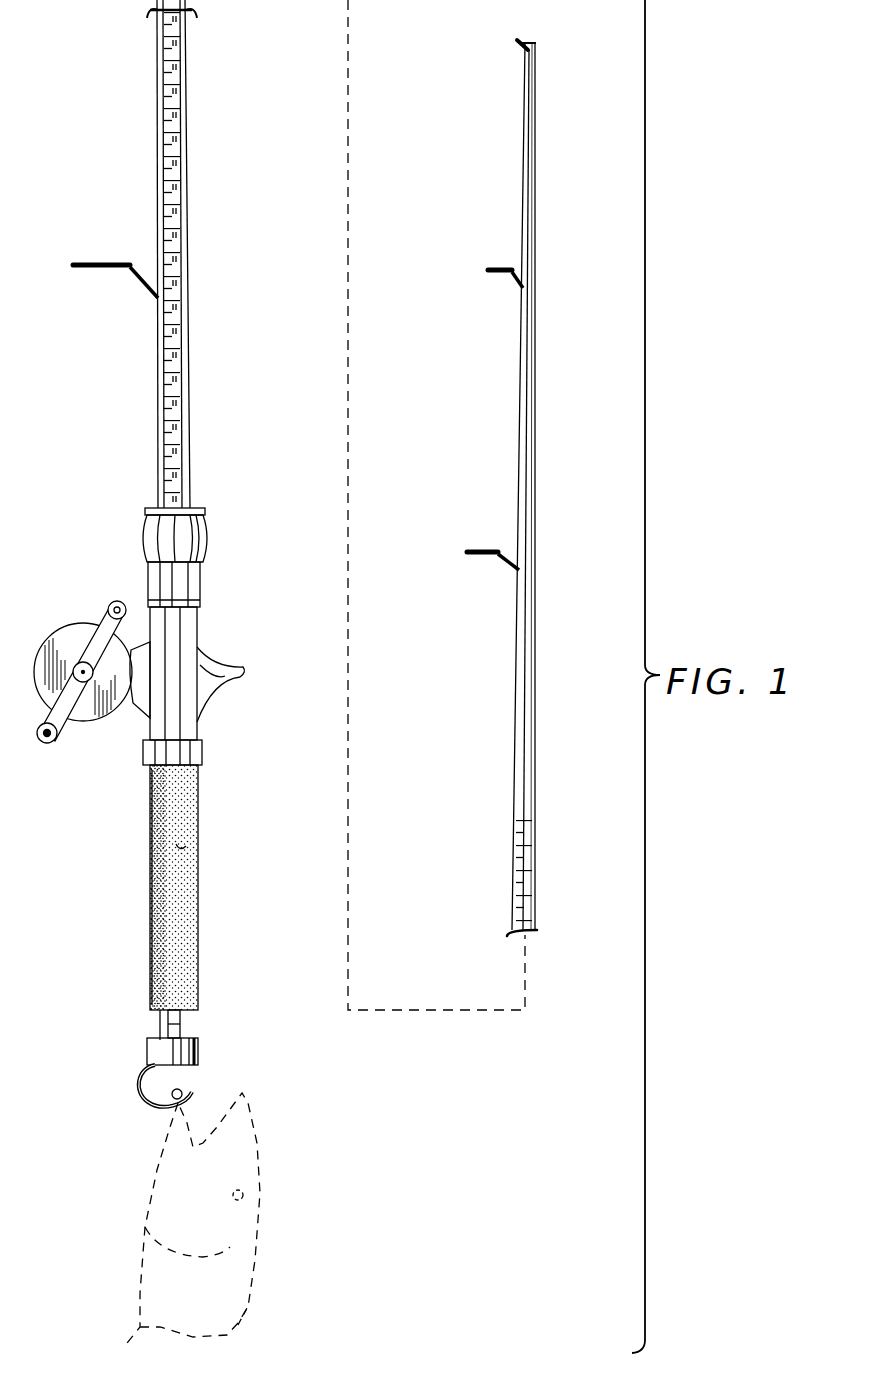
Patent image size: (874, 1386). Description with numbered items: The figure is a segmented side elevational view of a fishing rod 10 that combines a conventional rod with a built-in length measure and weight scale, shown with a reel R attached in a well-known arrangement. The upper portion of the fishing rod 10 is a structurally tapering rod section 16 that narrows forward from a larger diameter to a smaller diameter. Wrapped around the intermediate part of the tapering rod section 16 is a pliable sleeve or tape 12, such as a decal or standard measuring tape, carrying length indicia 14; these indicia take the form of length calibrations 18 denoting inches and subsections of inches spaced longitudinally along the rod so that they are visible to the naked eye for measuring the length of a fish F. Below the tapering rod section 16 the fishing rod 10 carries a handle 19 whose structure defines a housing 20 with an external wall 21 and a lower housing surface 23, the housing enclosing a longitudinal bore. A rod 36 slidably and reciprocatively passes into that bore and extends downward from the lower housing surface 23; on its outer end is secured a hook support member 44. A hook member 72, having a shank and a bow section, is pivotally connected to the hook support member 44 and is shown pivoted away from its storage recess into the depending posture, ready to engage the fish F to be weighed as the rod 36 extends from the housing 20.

The fishing rod 10 is at (223, 583).
The sleeve or tape 12 is at (155, 408).
The length indicia 14 is at (185, 165).
The structurally tapering rod section 16 is at (172, 50).
The length calibrations 18 is at (178, 248).
The handle 19 is at (203, 920).
The housing 20 is at (202, 840).
The external wall 21 is at (160, 947).
The lower housing surface 23 is at (157, 1017).
The rod 36 is at (188, 1028).
The hook support member 44 is at (203, 1053).
The hook member 72 is at (142, 1108).
The reel R is at (92, 710).
The fish F is at (247, 1217).